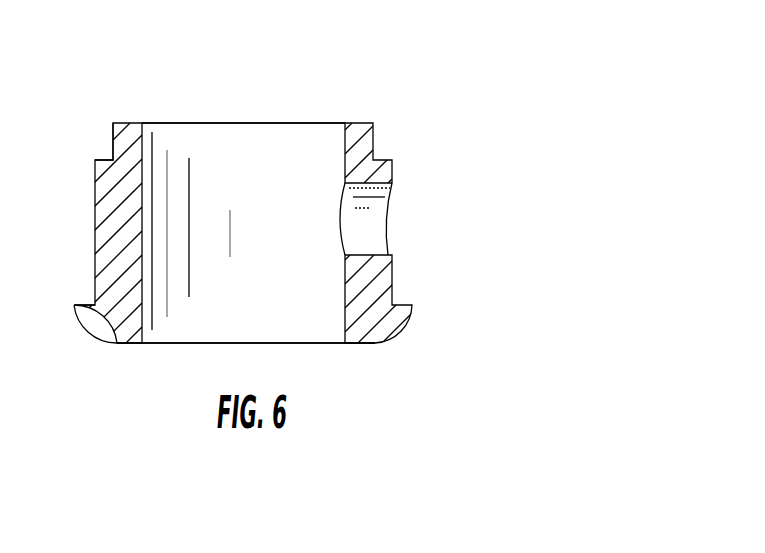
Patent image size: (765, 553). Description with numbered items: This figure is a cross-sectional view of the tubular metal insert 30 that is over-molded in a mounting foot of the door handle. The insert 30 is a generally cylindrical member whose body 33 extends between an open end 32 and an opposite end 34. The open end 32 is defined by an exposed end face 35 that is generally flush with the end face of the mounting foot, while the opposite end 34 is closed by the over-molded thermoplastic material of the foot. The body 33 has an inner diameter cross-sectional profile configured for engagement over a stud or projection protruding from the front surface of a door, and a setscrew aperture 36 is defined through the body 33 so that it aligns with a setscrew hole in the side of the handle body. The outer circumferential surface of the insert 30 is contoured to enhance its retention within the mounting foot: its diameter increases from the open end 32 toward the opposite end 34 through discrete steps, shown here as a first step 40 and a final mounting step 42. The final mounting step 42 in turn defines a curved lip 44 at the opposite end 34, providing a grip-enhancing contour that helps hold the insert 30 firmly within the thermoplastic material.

The tubular metal insert 30 is at (337, 83).
The open end 32 is at (247, 123).
The body 33 is at (95, 232).
The opposite end 34 is at (332, 343).
The exposed end face 35 is at (373, 123).
The setscrew aperture 36 is at (385, 228).
The step 40 is at (101, 160).
The final mounting step 42 is at (408, 305).
The curved lip 44 is at (108, 335).